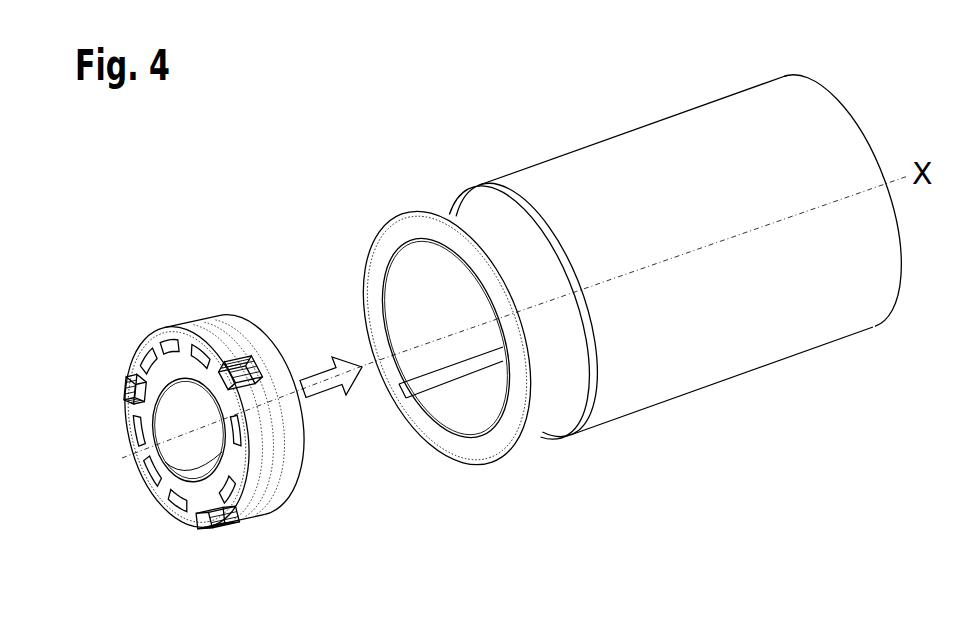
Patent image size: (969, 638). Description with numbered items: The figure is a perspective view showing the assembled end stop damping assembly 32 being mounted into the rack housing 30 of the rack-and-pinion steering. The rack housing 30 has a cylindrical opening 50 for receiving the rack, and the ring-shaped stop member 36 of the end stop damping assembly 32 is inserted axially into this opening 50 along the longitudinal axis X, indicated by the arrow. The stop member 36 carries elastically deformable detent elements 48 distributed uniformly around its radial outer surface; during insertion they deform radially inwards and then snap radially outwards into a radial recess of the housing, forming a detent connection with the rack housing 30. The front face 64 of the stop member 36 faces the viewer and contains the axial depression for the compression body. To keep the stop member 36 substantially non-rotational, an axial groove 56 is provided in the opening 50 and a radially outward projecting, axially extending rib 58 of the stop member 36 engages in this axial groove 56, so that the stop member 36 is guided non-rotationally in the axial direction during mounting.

The rack housing 30 is at (755, 350).
The end stop damping assembly 32 is at (262, 297).
The stop member 36 is at (283, 487).
The detent elements 48 is at (125, 388).
The cylindrical opening 50 is at (414, 278).
The axial groove 56 is at (446, 376).
The rib 58 is at (150, 485).
The front face 64 is at (155, 337).